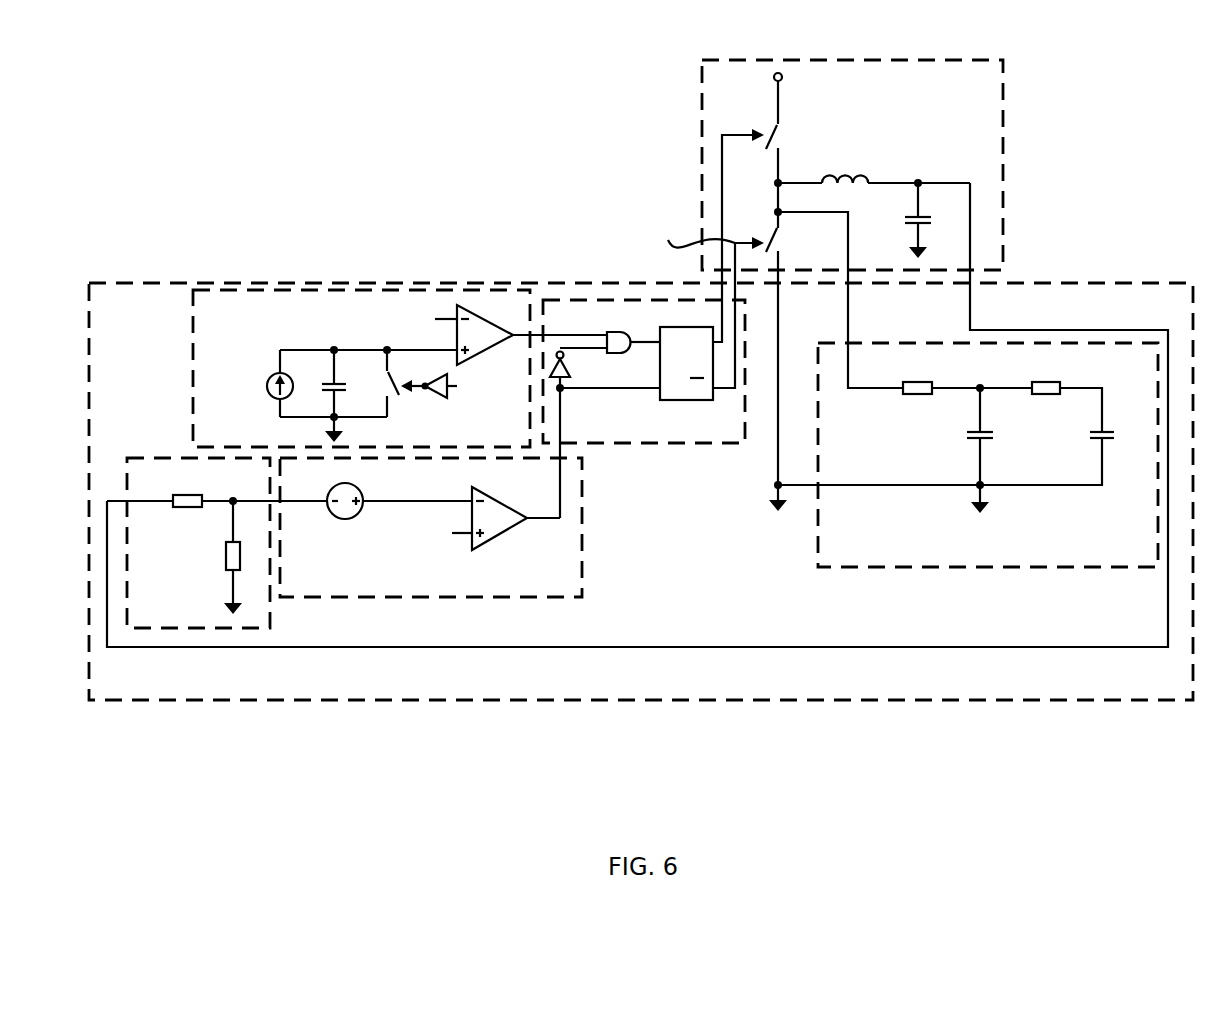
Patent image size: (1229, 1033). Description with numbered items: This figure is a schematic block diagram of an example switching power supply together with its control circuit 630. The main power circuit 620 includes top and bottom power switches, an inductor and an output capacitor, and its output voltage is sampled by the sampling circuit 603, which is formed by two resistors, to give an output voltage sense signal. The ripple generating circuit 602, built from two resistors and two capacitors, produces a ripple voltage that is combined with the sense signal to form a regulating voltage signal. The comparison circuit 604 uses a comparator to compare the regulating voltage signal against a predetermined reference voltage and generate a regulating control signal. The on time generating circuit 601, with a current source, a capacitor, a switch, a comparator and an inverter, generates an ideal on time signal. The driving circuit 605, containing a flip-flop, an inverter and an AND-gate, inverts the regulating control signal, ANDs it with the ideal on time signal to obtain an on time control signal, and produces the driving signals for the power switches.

The on time generating circuit 601 is at (361, 368).
The ripple generating circuit 602 is at (968, 455).
The sampling circuit 603 is at (193, 543).
The comparison circuit 604 is at (431, 527).
The driving circuit 605 is at (629, 409).
The main power circuit 620 is at (824, 285).
The control circuit 630 is at (641, 441).